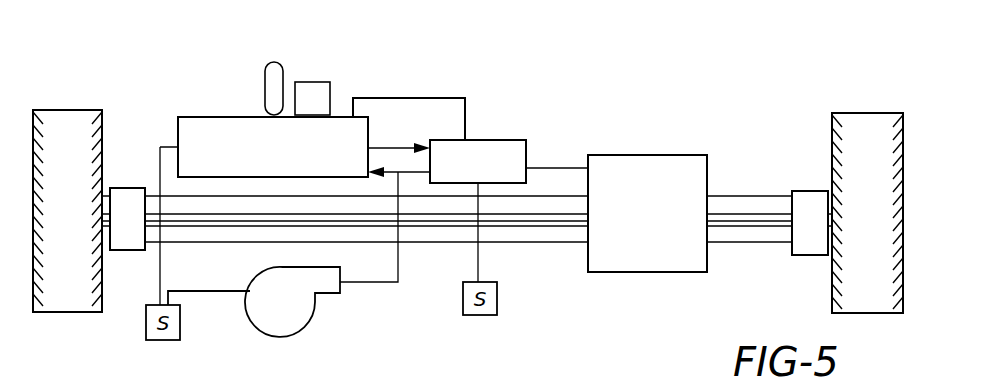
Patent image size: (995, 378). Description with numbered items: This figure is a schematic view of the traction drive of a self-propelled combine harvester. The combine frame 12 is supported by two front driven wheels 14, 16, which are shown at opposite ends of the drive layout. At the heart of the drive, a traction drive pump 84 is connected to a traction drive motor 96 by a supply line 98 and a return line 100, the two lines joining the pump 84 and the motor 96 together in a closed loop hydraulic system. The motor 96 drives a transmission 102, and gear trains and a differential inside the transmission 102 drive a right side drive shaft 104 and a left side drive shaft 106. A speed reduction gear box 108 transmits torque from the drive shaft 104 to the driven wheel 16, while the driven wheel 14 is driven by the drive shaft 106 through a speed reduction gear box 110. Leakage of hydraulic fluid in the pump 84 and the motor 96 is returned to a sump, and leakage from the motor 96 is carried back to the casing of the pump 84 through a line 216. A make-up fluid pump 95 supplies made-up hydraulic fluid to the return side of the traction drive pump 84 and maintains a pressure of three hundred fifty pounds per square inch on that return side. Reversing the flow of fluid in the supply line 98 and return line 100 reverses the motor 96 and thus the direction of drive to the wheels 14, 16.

The combine frame 12 is at (753, 197).
The driven wheel 14 is at (80, 120).
The driven wheel 16 is at (855, 122).
The traction drive pump 84 is at (197, 116).
The make-up fluid pump 95 is at (317, 310).
The traction drive motor 96 is at (500, 140).
The supply line 98 is at (398, 147).
The return line 100 is at (412, 173).
The transmission 102 is at (647, 155).
The right side drive shaft 104 is at (745, 245).
The left side drive shaft 106 is at (562, 243).
The speed reduction gear box 108 is at (808, 250).
The speed reduction gear box 110 is at (130, 250).
The line 216 is at (363, 98).